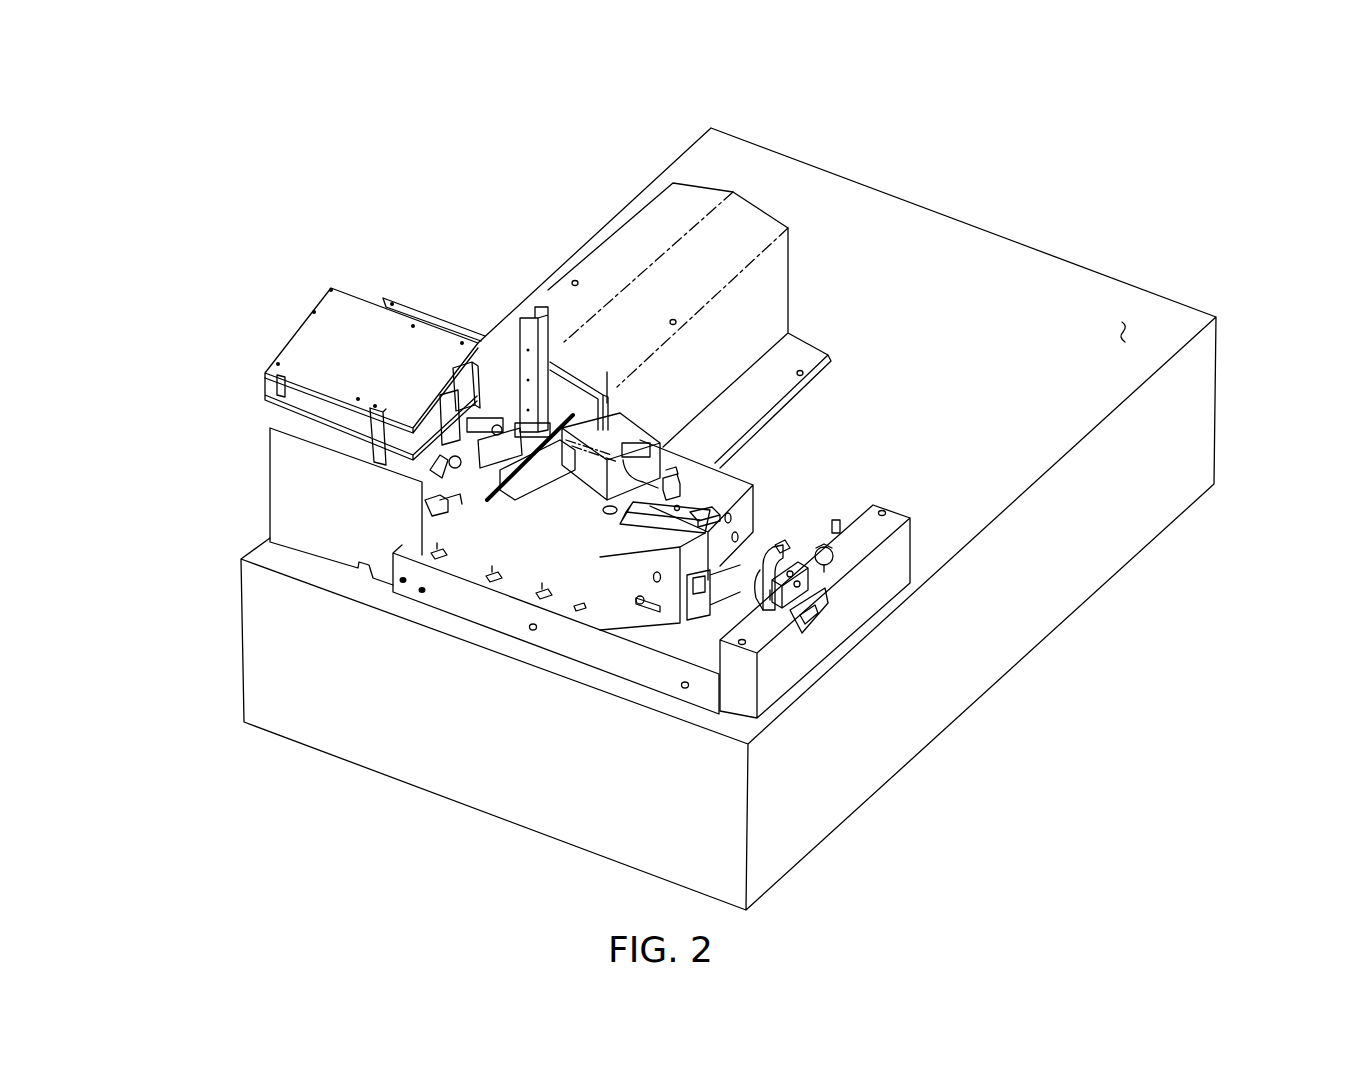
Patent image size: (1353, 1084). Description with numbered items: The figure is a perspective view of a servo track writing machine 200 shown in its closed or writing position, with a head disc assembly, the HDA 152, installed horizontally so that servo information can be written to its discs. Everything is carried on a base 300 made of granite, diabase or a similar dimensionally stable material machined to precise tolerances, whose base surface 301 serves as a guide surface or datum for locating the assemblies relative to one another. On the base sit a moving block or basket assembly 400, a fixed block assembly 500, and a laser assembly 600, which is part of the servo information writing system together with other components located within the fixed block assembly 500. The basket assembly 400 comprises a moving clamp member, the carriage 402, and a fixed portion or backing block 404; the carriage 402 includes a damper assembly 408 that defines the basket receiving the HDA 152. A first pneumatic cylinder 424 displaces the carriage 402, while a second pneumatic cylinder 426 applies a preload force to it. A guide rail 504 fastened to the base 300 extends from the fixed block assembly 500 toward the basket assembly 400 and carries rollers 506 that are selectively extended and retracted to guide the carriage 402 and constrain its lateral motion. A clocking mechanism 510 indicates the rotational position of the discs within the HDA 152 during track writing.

The servo track writing machine 200 is at (577, 203).
The HDA 152 is at (560, 420).
The base 300 is at (1180, 422).
The base surface 301 is at (1124, 326).
The basket assembly 400 is at (775, 498).
The carriage 402 is at (722, 487).
The backing block 404 is at (873, 585).
The damper assembly 408 is at (580, 425).
The first pneumatic cylinder 424 is at (735, 593).
The second pneumatic cylinder 426 is at (745, 566).
The fixed block assembly 500 is at (384, 287).
The guide rail 504 is at (652, 677).
The rollers 506 is at (541, 595).
The clocking mechanism 510 is at (479, 416).
The laser assembly 600 is at (775, 200).